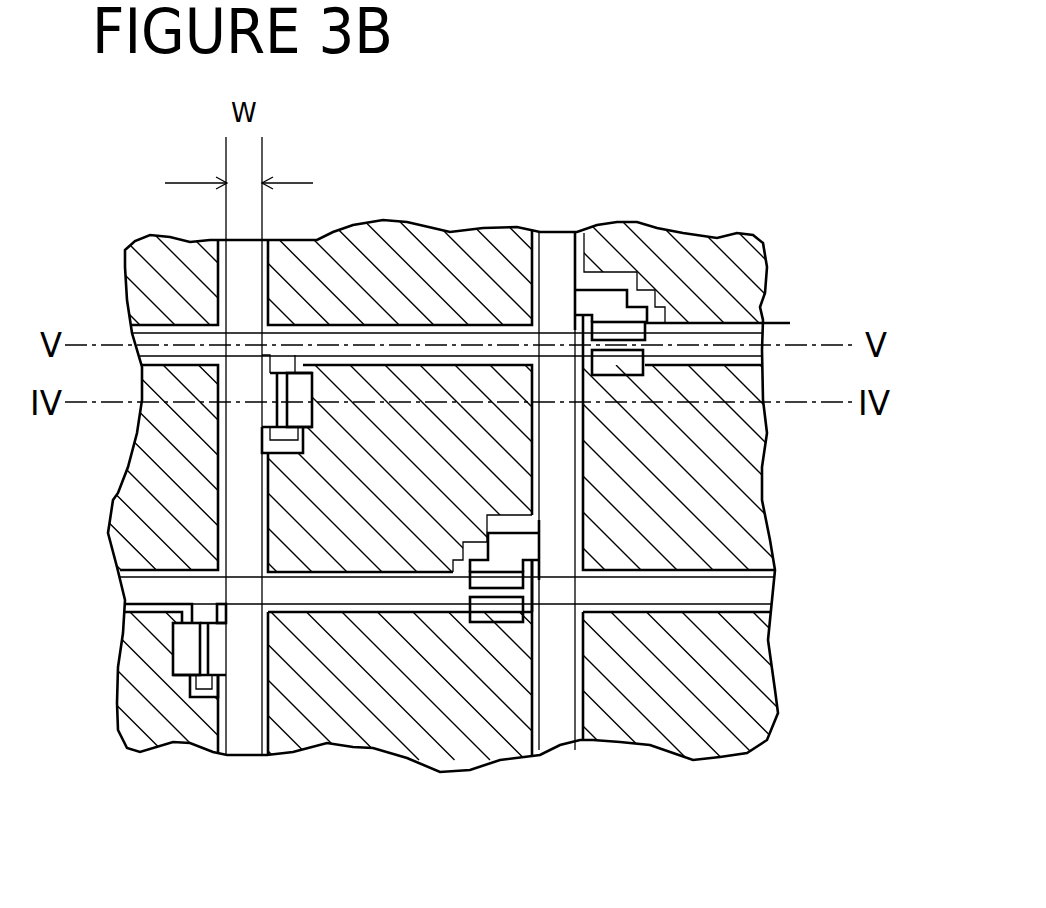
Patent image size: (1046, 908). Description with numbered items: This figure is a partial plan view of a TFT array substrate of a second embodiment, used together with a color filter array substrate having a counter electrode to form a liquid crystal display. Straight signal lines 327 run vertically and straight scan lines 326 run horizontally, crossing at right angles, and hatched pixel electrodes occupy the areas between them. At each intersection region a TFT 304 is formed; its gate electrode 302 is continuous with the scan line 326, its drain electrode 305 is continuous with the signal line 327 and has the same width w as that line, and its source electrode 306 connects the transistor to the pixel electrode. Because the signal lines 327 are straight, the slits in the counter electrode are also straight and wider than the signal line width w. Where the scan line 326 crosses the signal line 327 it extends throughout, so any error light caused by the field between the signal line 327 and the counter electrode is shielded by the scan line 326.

The TFT 304 is at (606, 345).
The scan line 326 is at (745, 342).
The signal line 327 is at (247, 730).
The gate electrode 302 is at (208, 696).
The drain electrode 305 is at (218, 652).
The source electrode 306 is at (175, 655).